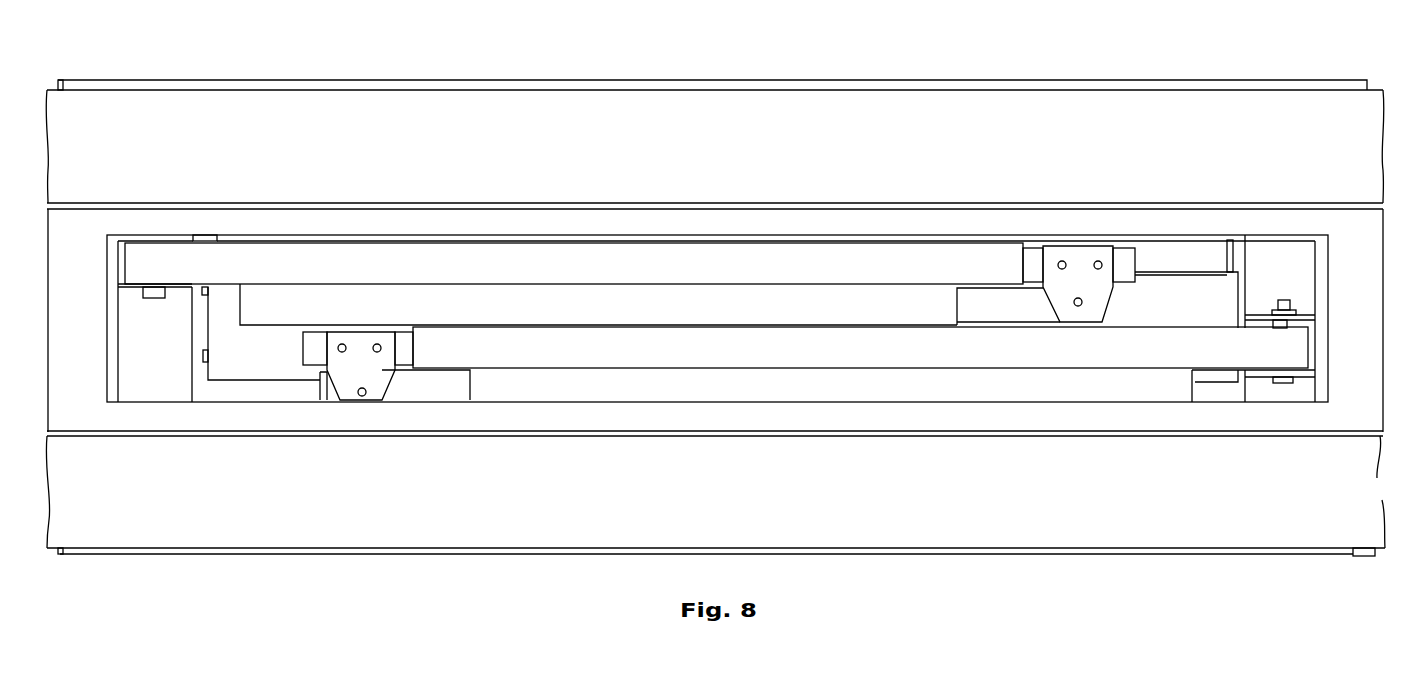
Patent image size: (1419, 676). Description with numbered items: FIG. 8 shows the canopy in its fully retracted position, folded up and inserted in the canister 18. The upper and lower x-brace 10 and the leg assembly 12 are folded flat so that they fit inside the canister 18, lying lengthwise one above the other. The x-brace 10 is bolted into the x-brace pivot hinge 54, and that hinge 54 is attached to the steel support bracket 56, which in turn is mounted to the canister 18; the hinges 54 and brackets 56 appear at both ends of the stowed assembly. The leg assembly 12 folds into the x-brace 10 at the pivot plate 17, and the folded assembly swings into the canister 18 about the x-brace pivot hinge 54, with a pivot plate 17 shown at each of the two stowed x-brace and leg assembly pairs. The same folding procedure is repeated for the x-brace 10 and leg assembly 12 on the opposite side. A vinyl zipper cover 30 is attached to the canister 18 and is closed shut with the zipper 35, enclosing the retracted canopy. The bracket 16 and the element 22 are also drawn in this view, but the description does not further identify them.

The x-brace 10 is at (174, 248).
The leg assembly 12 is at (277, 290).
The support bracket 16 is at (238, 380).
The pivot plate 17 is at (1073, 253).
The canister 18 is at (1385, 435).
The guide rail 22 is at (1179, 240).
The vinyl zipper cover 30 is at (1100, 110).
The zipper 35 is at (1118, 552).
The x-brace pivot hinge 54 is at (137, 288).
The steel support bracket 56 is at (127, 388).